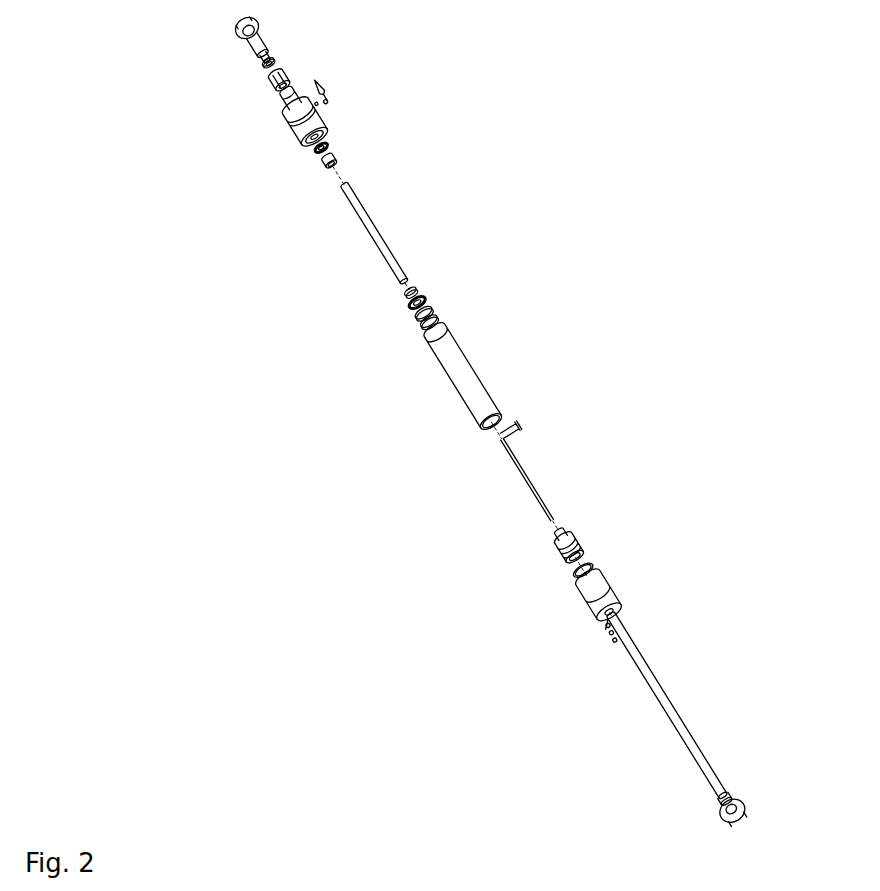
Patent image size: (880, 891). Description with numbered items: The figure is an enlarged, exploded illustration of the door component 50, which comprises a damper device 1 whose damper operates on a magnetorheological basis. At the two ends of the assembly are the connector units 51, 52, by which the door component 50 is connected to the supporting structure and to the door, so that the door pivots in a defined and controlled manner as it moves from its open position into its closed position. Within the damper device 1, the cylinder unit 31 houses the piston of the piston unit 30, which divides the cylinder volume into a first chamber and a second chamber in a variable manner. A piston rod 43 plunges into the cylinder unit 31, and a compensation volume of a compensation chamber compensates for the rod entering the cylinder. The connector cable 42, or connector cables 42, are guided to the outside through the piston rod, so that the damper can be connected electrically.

The damper device 1 is at (422, 379).
The piston unit 30 is at (621, 554).
The cylinder unit 31 is at (452, 357).
The connector cable 42 is at (521, 423).
The piston rod 43 is at (663, 700).
The door component 50 is at (606, 189).
The connector unit 51 is at (237, 18).
The connector unit 52 is at (735, 800).